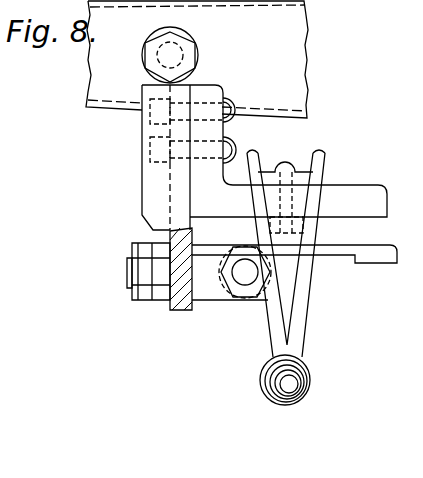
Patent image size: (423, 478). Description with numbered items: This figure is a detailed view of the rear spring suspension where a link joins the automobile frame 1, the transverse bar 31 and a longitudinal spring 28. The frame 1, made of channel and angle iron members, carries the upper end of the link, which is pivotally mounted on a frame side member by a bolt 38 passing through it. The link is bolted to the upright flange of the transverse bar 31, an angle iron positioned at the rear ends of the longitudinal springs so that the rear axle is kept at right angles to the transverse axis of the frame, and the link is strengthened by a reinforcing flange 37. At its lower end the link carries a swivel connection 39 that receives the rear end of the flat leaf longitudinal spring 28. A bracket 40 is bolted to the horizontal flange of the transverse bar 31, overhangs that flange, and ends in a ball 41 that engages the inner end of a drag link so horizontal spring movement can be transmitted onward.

The frame 1 is at (97, 89).
The bolt 38 is at (177, 52).
The reinforcing flange 37 is at (155, 185).
The transverse bar 31 is at (380, 190).
The longitudinal spring 28 is at (387, 263).
The swivel connection 39 is at (220, 290).
The bracket 40 is at (298, 300).
The ball 41 is at (300, 380).